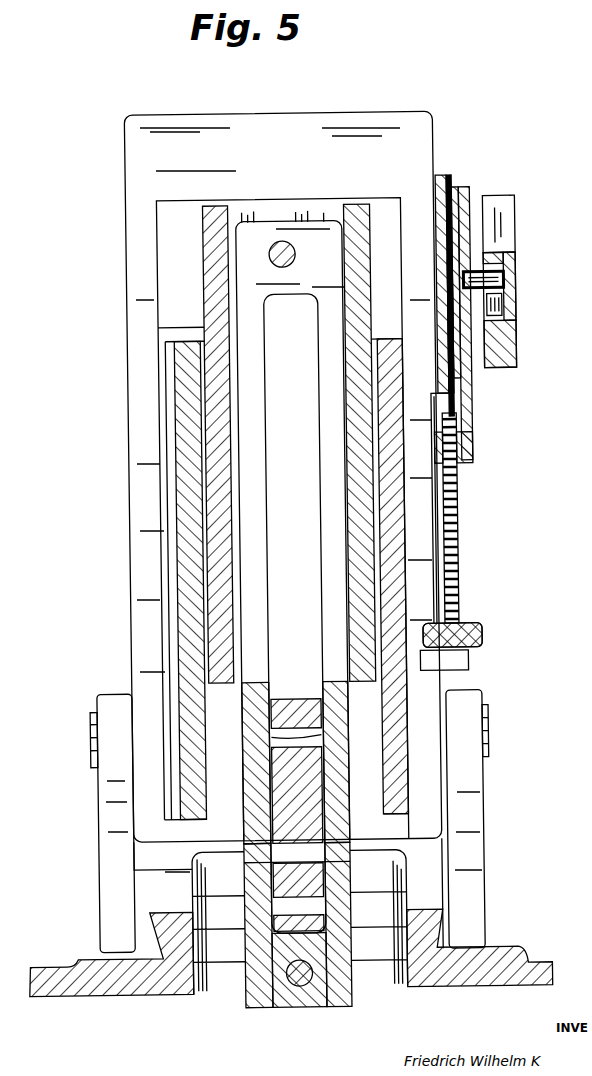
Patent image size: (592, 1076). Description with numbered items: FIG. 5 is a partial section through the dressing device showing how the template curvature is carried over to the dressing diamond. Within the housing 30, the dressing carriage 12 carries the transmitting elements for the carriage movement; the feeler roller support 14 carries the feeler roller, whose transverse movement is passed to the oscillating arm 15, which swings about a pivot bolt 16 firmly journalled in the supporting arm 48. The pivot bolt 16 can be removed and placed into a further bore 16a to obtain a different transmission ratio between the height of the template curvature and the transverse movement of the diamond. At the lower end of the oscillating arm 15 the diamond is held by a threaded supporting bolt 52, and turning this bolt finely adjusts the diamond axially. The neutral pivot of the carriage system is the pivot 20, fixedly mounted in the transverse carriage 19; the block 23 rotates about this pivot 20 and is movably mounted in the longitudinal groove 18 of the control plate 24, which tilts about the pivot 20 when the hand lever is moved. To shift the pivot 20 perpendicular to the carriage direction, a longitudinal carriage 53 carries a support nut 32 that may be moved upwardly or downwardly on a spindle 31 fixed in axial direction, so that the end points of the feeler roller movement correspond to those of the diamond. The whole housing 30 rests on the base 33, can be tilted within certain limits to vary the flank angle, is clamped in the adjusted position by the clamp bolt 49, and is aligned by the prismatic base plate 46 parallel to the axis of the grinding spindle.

The housing 30 is at (401, 113).
The dressing carriage 12 is at (184, 467).
The feeler roller support 14 is at (296, 246).
The supporting arm 48 is at (305, 560).
The oscillating arm 15 is at (350, 764).
The pivot bolt 16 is at (245, 849).
The bore 16a is at (308, 737).
The threaded supporting bolt 52 is at (304, 982).
The base 33 is at (138, 936).
The prismatic base plate 46 is at (424, 979).
The clamp bolt 49 is at (90, 733).
The longitudinal carriage 53 is at (475, 405).
The support nut 32 is at (475, 449).
The spindle 31 is at (463, 515).
The transverse carriage 19 is at (468, 225).
The pivot 20 is at (519, 306).
The block 23 is at (504, 270).
The longitudinal groove 18 is at (507, 323).
The control plate 24 is at (509, 353).